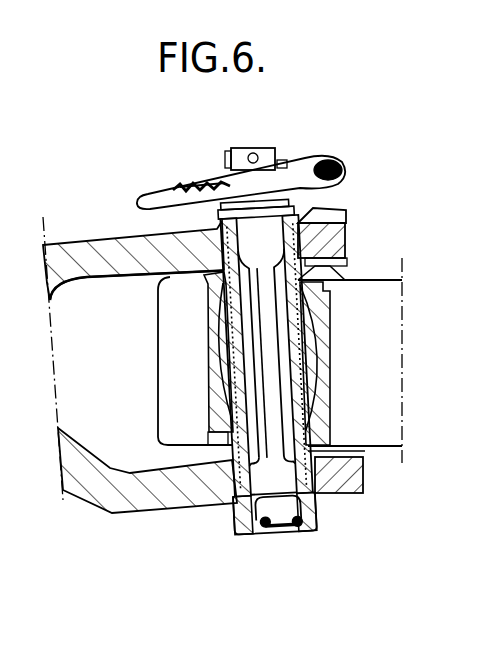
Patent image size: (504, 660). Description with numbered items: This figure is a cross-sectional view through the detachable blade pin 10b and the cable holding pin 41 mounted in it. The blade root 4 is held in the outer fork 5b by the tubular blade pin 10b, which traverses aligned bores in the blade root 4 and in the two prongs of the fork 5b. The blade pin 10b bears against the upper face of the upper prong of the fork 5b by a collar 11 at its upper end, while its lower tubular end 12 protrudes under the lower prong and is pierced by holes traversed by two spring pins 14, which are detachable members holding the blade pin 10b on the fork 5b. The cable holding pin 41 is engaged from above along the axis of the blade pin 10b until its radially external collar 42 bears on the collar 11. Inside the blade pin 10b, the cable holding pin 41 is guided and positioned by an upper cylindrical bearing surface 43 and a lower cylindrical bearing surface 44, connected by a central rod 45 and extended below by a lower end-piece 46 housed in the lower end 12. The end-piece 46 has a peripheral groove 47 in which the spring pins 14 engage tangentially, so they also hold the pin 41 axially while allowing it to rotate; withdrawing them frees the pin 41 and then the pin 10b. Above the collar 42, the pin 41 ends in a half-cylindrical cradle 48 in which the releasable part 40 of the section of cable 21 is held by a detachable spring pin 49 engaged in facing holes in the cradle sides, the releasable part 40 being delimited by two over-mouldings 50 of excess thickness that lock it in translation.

The blade root 4 is at (318, 304).
The outer fork 5b is at (343, 245).
The blade pin 10b is at (300, 355).
The collar 11 is at (312, 212).
The lower tubular end 12 is at (315, 525).
The spring pins 14 is at (265, 526).
The section of cable 21 is at (236, 171).
The releasable part 40 is at (270, 185).
The cable holding pin 41 is at (257, 350).
The collar 42 is at (226, 213).
The upper cylindrical bearing surface 43 is at (212, 270).
The lower cylindrical bearing surface 44 is at (267, 475).
The central rod 45 is at (268, 385).
The lower end-piece 46 is at (278, 507).
The peripheral groove 47 is at (283, 531).
The cradle 48 is at (268, 152).
The spring pin 49 is at (226, 153).
The over-mouldings 50 is at (285, 163).